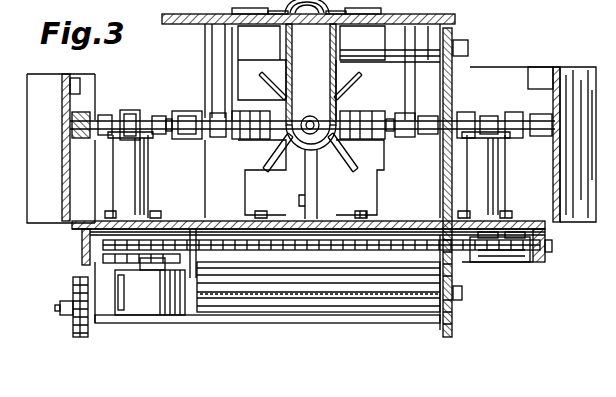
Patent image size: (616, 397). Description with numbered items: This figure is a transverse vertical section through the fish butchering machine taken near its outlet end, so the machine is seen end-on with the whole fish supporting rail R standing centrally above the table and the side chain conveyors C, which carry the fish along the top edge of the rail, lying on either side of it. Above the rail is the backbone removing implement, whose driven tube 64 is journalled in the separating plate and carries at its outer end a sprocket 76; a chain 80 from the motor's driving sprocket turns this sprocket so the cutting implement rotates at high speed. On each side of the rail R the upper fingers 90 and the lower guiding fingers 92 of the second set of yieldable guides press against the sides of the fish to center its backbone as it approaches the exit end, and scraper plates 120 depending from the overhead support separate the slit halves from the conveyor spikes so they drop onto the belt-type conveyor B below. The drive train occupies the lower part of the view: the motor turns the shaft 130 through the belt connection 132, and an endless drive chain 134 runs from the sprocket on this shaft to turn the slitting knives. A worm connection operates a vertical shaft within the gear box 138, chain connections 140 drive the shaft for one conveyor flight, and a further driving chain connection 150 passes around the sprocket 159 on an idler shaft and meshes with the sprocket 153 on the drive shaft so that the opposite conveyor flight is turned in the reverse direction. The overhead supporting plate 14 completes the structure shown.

The top plate 14 is at (453, 14).
The side chain conveyor C is at (142, 112).
The scraper plate 120 is at (208, 112).
The chain 80 is at (328, 52).
The upper finger 90 is at (334, 80).
The sprocket 76 is at (316, 102).
The driven tube 64 is at (282, 136).
The lower guiding finger 92 is at (271, 160).
The fish supporting rail R is at (314, 178).
The conveyor belt B is at (222, 220).
The driving chain connection 150 is at (325, 250).
The shaft 130 is at (205, 316).
The gear box 138 is at (140, 314).
The chain connection 140 is at (128, 270).
The belt connection 132 is at (74, 278).
The endless drive chain 134 is at (455, 284).
The sprocket 153 is at (490, 256).
The sprocket 159 is at (545, 240).